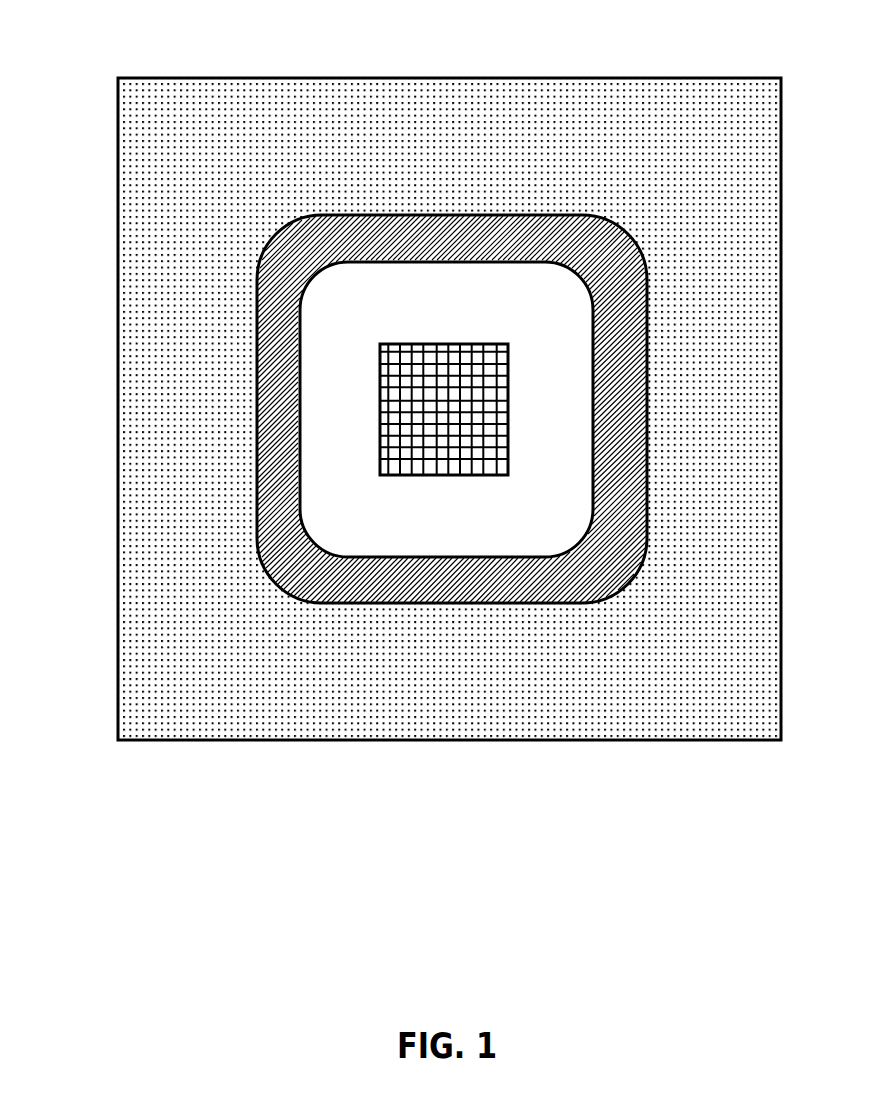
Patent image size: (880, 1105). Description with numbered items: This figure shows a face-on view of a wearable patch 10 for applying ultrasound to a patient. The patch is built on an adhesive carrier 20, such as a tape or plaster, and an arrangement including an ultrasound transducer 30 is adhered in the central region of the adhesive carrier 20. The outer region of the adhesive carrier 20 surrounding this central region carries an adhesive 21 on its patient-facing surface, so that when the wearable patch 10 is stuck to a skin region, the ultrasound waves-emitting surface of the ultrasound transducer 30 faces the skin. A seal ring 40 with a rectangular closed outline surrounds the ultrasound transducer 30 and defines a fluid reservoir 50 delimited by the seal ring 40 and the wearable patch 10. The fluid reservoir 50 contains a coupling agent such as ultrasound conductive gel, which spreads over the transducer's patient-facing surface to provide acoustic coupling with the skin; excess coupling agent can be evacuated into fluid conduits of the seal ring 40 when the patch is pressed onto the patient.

The wearable patch 10 is at (408, 462).
The adhesive carrier 20 is at (449, 483).
The adhesive 21 is at (647, 718).
The ultrasound transducer 30 is at (397, 417).
The seal ring 40 is at (543, 227).
The fluid reservoir 50 is at (395, 287).